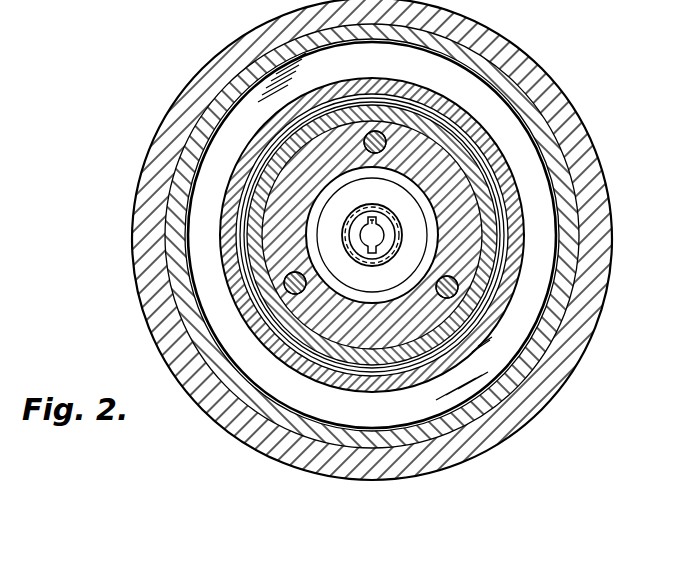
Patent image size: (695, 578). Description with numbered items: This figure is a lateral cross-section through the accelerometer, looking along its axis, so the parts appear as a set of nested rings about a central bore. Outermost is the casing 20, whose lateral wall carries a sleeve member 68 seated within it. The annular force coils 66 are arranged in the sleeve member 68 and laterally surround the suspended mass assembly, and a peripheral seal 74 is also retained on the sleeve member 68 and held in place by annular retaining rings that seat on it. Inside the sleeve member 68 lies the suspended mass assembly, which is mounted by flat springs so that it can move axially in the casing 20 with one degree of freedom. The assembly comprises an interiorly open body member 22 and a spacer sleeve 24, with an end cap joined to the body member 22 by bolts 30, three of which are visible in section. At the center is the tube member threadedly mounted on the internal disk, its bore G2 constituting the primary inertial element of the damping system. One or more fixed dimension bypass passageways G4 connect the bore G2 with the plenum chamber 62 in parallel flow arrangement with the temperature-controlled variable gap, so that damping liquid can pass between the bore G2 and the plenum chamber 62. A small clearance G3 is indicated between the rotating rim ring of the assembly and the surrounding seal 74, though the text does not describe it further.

The casing 20 is at (607, 222).
The sleeve member 68 is at (191, 136).
The annular force coils 66 is at (381, 69).
The peripheral seal 74 is at (483, 313).
The gap between ring and rotor G3 is at (513, 218).
The spacer sleeve 24 is at (382, 120).
The body member 22 is at (287, 226).
The bolts 30 is at (386, 146).
The plenum chamber 62 is at (386, 290).
The fixed dimension bypass passageways G4 is at (362, 213).
The bore of tube member G2 is at (378, 233).